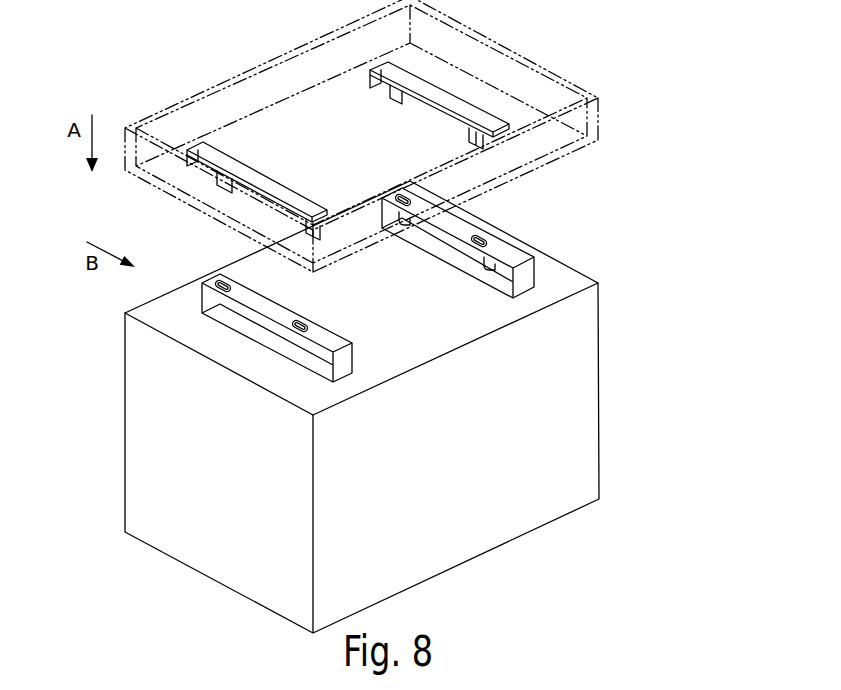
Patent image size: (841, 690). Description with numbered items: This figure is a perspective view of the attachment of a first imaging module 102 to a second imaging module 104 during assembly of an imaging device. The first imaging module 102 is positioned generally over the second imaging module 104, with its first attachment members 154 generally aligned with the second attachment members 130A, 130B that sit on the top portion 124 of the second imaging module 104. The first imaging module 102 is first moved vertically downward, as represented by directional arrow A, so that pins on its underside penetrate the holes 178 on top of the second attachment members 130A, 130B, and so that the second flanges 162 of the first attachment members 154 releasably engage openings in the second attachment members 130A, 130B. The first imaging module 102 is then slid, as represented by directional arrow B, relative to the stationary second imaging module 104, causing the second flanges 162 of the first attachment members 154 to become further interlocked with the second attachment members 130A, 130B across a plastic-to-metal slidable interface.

The first imaging module 102 is at (233, 78).
The second imaging module 104 is at (149, 410).
The top portion 124 is at (445, 342).
The second attachment member 130A is at (355, 360).
The second attachment member 130B is at (526, 294).
The first attachment member 154 is at (418, 100).
The second flange 162 is at (372, 73).
The hole 178 is at (298, 328).